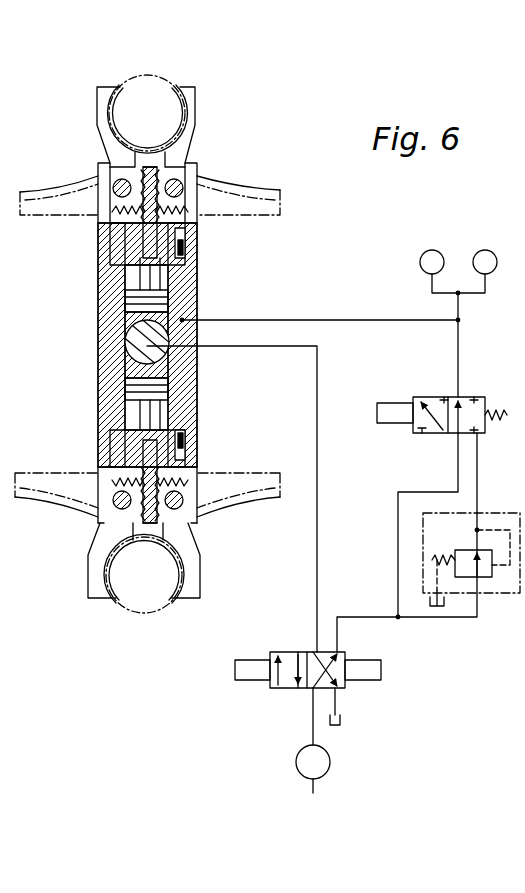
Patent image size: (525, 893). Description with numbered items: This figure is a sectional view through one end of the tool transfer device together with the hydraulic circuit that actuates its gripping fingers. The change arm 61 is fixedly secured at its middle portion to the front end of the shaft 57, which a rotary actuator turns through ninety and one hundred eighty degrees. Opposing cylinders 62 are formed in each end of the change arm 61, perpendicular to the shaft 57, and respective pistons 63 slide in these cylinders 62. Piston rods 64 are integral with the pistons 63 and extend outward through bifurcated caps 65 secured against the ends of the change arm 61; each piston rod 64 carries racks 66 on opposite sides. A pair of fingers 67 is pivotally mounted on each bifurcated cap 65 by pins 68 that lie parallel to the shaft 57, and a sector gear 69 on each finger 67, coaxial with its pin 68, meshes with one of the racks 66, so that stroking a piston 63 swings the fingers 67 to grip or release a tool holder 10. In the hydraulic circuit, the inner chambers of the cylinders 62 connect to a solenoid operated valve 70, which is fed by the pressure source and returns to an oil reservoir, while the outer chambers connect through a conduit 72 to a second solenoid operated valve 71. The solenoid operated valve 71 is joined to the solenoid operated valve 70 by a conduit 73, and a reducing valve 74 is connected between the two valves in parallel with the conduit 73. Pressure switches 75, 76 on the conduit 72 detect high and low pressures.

The tool holder 10 is at (205, 100).
The shaft 57 is at (130, 345).
The change arm 61 is at (105, 325).
The cylinders 62 is at (137, 280).
The pistons 63 is at (170, 298).
The piston rods 64 is at (180, 247).
The bifurcated caps 65 is at (123, 250).
The racks 66 is at (142, 230).
The fingers 67 is at (100, 120).
The pins 68 is at (117, 188).
The sector gear 69 is at (115, 215).
The solenoid operated valve 70 is at (282, 652).
The solenoid operated valve 71 is at (490, 436).
The conduit 72 is at (462, 347).
The conduit 73 is at (398, 555).
The reducing valve 74 is at (498, 600).
The pressure switch 75 is at (432, 262).
The pressure switch 76 is at (485, 262).